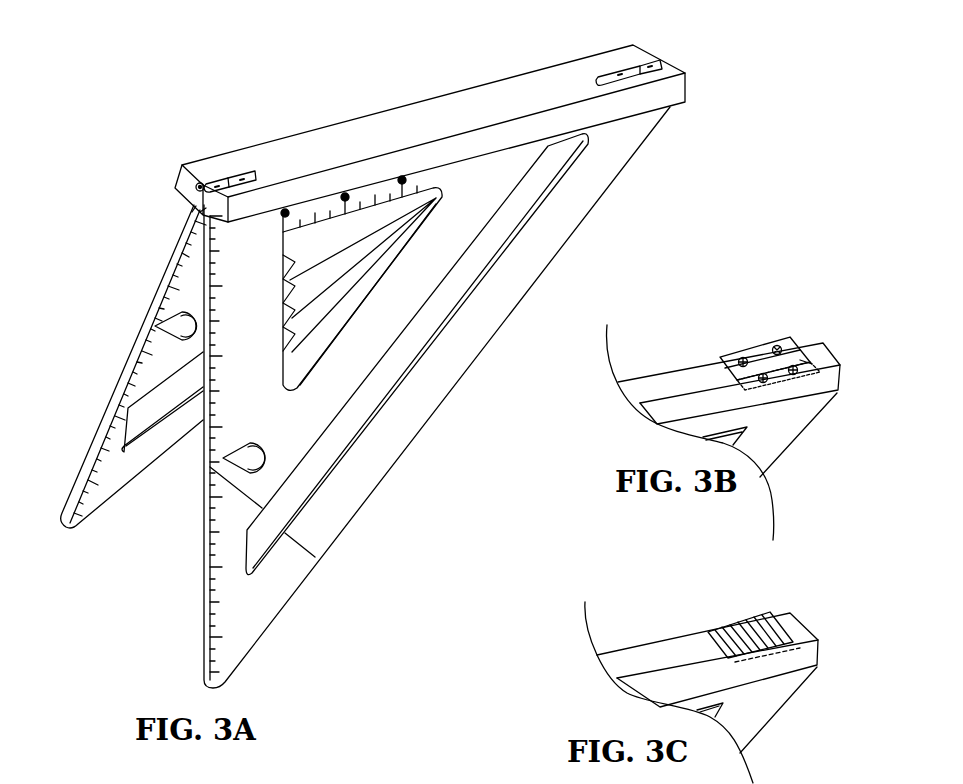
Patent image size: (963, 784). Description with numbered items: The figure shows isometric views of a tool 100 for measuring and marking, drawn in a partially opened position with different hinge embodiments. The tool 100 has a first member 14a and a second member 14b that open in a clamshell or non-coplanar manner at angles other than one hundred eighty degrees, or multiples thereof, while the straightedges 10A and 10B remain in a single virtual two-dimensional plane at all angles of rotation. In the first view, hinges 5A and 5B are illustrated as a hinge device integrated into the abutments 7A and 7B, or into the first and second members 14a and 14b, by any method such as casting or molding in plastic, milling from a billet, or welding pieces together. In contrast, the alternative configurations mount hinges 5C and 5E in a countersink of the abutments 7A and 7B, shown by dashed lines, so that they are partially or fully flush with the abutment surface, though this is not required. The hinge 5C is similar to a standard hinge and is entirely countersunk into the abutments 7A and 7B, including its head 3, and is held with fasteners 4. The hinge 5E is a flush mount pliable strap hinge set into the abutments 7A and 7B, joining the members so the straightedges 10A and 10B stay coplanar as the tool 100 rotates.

In FIG. 3A, the tool 100 is at (753, 89).
In FIG. 3A, the head 3 is at (196, 187).
In FIG. 3B, the head 3 is at (803, 362).
In FIG. 3B, the screws 4 is at (780, 340).
In FIG. 3A, the hinge 5A is at (625, 67).
In FIG. 3A, the hinge 5B is at (213, 183).
In FIG. 3B, the hinge 5C is at (757, 350).
In FIG. 3C, the flush mount pliable strap hinge 5E is at (760, 618).
In FIG. 3A, the abutment 7A is at (317, 137).
In FIG. 3B, the abutment 7A is at (685, 373).
In FIG. 3C, the abutment 7A is at (678, 645).
In FIG. 3A, the abutment 7B is at (436, 138).
In FIG. 3B, the abutment 7B is at (752, 403).
In FIG. 3C, the abutment 7B is at (747, 677).
In FIG. 3A, the straightedge 10A is at (200, 613).
In FIG. 3A, the straightedge 10B is at (93, 420).
In FIG. 3A, the first member 14a is at (458, 383).
In FIG. 3A, the second member 14b is at (168, 452).